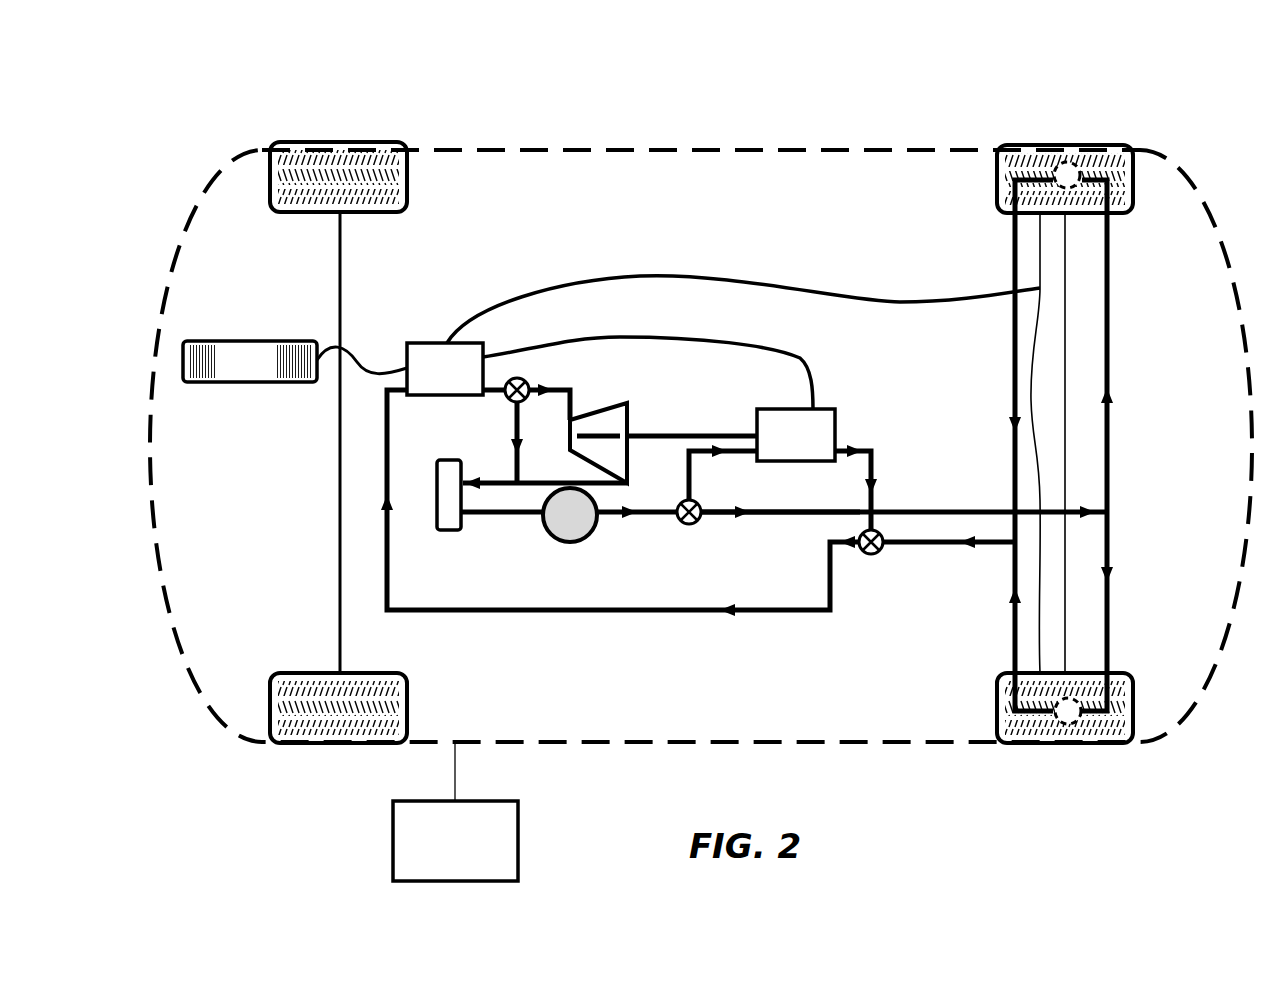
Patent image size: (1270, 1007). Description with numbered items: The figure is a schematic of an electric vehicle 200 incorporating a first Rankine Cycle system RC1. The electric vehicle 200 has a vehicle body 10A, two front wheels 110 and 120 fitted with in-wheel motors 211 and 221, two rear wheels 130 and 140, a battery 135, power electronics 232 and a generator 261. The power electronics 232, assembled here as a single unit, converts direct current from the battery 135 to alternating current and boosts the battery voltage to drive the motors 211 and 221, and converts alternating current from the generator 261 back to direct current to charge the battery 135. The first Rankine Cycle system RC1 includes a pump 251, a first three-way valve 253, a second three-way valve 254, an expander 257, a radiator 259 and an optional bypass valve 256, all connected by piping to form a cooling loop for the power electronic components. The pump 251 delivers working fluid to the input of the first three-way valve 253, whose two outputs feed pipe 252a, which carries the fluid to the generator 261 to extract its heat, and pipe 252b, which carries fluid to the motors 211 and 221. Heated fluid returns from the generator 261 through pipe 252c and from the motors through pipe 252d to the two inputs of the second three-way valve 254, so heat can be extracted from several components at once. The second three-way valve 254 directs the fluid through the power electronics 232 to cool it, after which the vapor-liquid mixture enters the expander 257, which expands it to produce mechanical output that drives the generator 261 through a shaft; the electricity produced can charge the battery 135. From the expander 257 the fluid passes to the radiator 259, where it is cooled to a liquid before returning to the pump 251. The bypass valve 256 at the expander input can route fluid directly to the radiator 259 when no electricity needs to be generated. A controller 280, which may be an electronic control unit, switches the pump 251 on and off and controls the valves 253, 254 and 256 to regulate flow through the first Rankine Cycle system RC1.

The electric vehicle 200 is at (1195, 96).
The vehicle body 10A is at (624, 140).
The rear wheel 130 is at (265, 148).
The rear wheel 140 is at (270, 702).
The front wheel 110 is at (1110, 144).
The front wheel 120 is at (1110, 746).
The in-wheel motor 211 is at (1063, 160).
The in-wheel motor 221 is at (1068, 726).
The battery 135 is at (250, 361).
The power electronics 232 is at (445, 369).
The first Rankine Cycle system RC1 is at (882, 406).
The pump 251 is at (570, 515).
The pipe 252a is at (693, 478).
The pipe 252b is at (762, 520).
The pipe 252c is at (866, 488).
The pipe 252d is at (950, 550).
The first three-way valve 253 is at (685, 527).
The second three-way valve 254 is at (871, 557).
The bypass valve 256 is at (527, 381).
The expander 257 is at (625, 405).
The radiator 259 is at (437, 484).
The generator 261 is at (796, 435).
The controller 280 is at (455, 811).